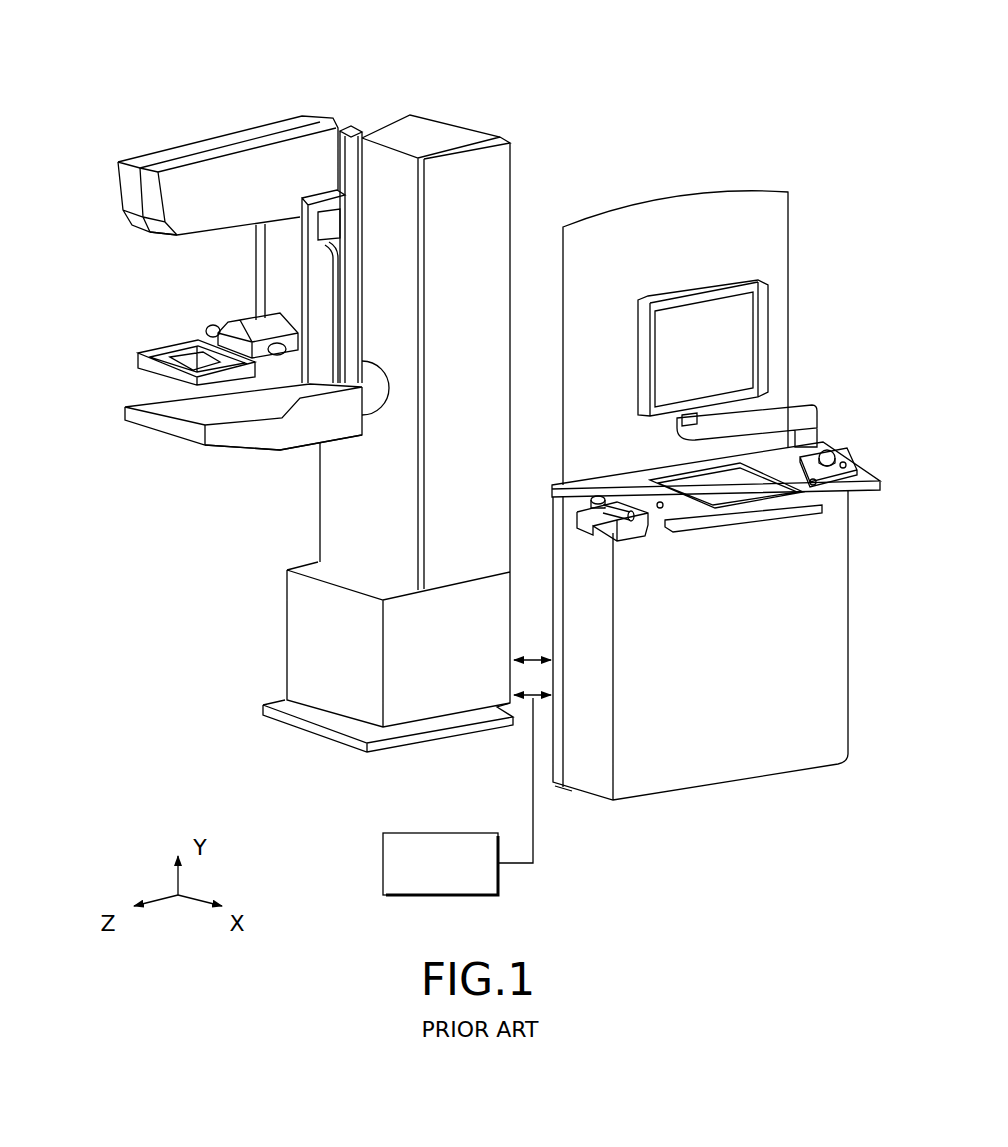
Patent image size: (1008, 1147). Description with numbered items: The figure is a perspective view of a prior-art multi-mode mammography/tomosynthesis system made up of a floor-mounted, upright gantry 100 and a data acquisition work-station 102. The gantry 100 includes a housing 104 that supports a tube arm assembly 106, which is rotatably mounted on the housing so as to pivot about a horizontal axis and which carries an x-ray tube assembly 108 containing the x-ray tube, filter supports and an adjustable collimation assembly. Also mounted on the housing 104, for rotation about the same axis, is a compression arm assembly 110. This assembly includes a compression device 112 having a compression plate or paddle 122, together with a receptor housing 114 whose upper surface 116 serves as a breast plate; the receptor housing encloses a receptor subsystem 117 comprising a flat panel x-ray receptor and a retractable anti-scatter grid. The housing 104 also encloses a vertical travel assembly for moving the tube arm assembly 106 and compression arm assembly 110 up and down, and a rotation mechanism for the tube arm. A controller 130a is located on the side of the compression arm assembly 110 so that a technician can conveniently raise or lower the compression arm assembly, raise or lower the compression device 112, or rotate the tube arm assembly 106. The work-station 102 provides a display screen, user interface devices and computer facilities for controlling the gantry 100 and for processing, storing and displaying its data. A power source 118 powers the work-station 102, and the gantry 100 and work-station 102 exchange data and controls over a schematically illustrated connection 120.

The gantry 100 is at (150, 66).
The data acquisition work-station 102 is at (740, 177).
The housing 104 is at (494, 133).
The tube arm assembly 106 is at (336, 112).
The x-ray tube assembly 108 is at (146, 237).
The compression arm assembly 110 is at (90, 342).
The compression device 112 is at (190, 317).
The receptor housing 114 is at (124, 418).
The upper surface 116 is at (145, 397).
The receptor subsystem 117 is at (168, 463).
The power source 118 is at (383, 863).
The connection 120 is at (527, 656).
The compression plate or paddle 122 is at (154, 346).
The controller 130a is at (334, 224).